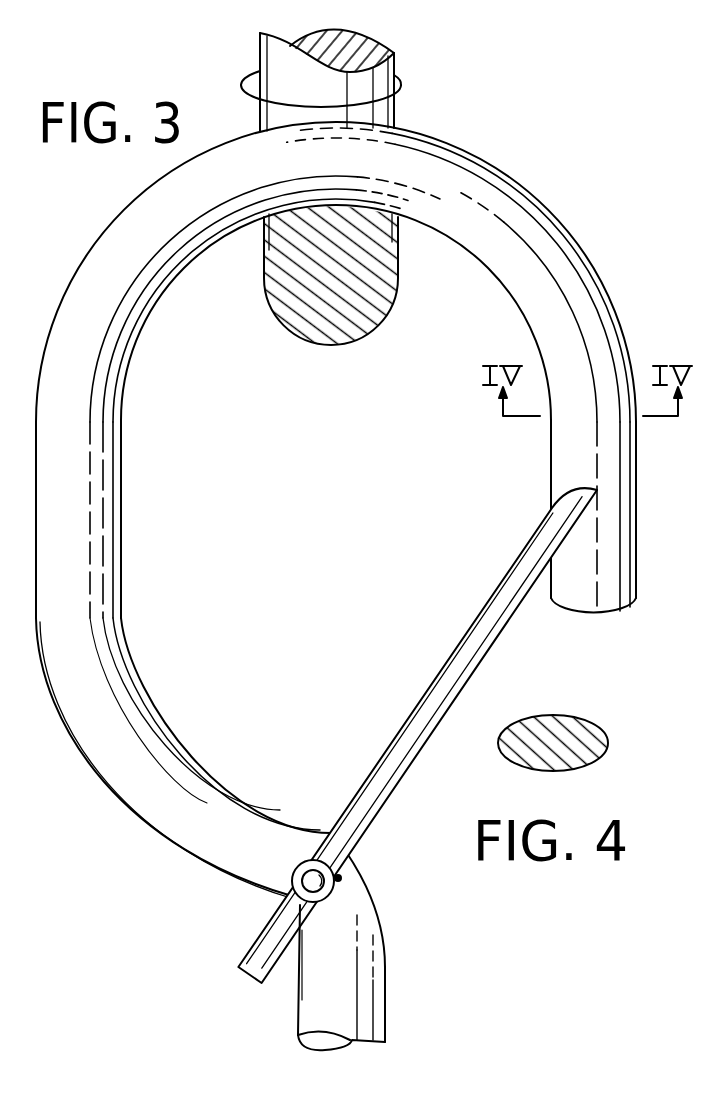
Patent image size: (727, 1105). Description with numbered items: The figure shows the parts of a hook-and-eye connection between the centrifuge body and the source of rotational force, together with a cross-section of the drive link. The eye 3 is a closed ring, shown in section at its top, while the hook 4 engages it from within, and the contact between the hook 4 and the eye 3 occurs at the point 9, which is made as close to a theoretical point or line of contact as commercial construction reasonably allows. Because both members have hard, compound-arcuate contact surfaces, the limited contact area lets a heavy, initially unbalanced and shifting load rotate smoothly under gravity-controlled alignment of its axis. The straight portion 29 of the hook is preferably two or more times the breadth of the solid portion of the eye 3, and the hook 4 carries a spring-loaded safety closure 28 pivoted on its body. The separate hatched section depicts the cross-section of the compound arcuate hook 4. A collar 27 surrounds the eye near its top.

The eye 3 is at (398, 63).
The annular collar 27 is at (413, 67).
The contact between the hook and eye 9 is at (290, 216).
The straight portion of the hook 29 is at (123, 516).
The spring loaded safety closure 28 is at (430, 684).
The hook 4 is at (388, 948).